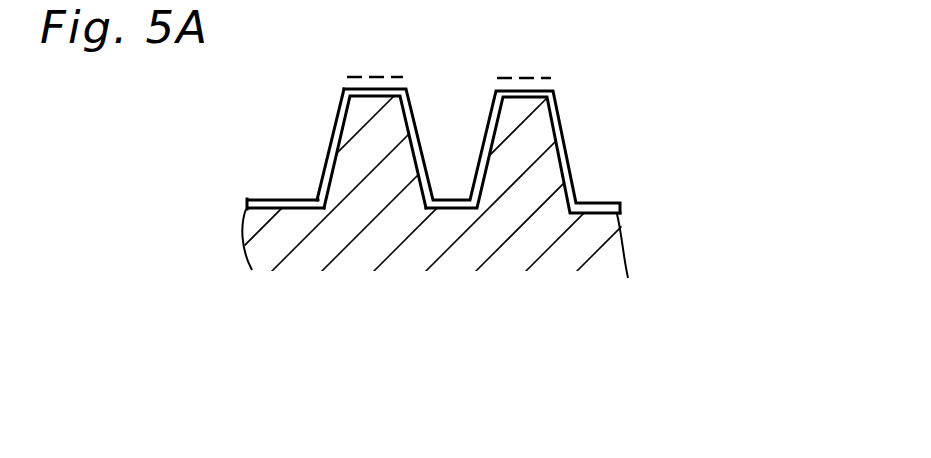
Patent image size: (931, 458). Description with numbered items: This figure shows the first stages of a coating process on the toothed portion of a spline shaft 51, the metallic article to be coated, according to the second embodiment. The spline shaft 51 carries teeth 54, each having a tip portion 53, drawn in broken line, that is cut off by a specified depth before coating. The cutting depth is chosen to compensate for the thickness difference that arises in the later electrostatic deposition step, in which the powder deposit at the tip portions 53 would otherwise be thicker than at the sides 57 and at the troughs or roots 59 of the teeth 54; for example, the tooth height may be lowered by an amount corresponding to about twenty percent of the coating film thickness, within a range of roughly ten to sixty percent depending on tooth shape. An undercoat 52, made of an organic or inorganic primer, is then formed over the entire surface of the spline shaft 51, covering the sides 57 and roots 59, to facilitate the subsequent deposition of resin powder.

The spline shaft 51 is at (603, 253).
The undercoat 52 is at (595, 197).
The tip portion 53 is at (543, 76).
The teeth 54 is at (355, 121).
The sides 57 is at (331, 156).
The troughs or roots 59 is at (269, 198).